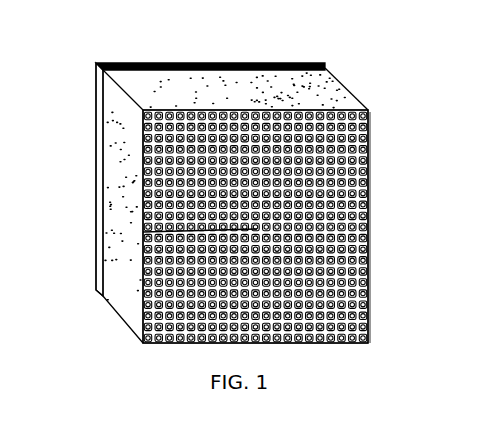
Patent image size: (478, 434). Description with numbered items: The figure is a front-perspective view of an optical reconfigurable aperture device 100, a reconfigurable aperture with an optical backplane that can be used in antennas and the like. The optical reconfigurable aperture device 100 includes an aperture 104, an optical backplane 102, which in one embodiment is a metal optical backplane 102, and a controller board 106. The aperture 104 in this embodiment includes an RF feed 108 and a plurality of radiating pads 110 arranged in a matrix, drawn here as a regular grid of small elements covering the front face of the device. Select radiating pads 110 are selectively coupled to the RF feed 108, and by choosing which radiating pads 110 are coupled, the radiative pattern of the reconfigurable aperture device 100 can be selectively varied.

The optical reconfigurable aperture device 100 is at (388, 100).
The optical backplane 102 is at (113, 118).
The aperture 104 is at (369, 199).
The controller board 106 is at (123, 64).
The RF feed 108 is at (150, 232).
The radiating pads 110 is at (363, 270).